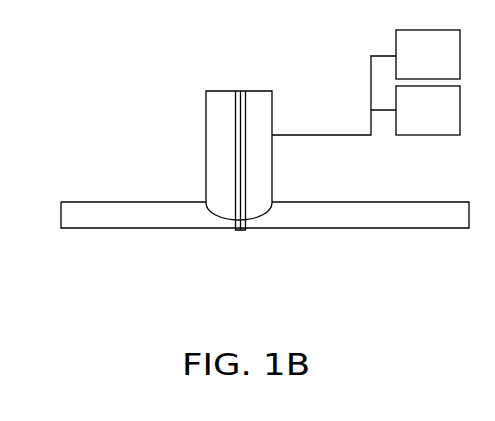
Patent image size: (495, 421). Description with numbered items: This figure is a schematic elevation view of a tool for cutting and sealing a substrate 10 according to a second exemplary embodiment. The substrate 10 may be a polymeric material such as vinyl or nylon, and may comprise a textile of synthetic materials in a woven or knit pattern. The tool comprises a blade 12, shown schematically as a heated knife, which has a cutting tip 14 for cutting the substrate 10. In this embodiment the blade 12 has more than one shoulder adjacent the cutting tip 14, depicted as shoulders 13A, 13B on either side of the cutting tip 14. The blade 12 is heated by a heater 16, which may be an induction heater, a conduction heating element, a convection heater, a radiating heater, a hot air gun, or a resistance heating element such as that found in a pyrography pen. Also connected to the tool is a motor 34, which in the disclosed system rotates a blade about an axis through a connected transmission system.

The substrate 10 is at (365, 208).
The blade 12 is at (237, 107).
The shoulder 13A is at (215, 113).
The shoulder 13B is at (272, 112).
The cutting tip 14 is at (240, 228).
The heater 16 is at (366, 110).
The motor 34 is at (415, 70).